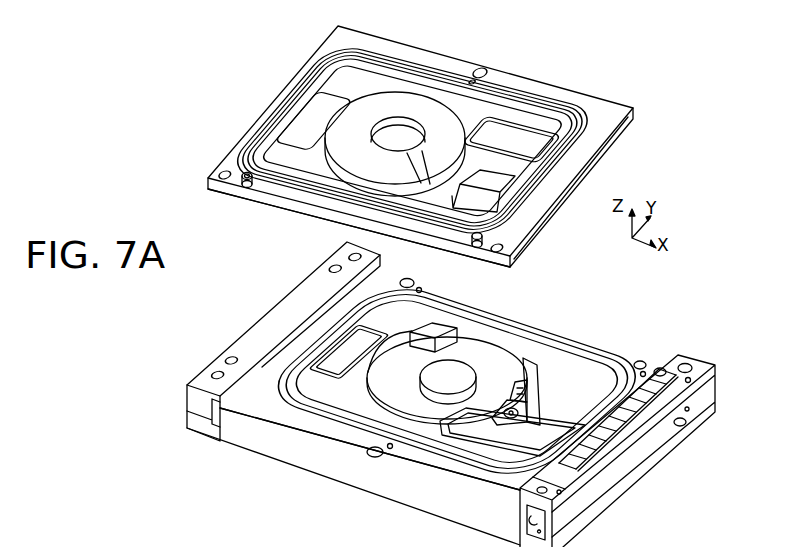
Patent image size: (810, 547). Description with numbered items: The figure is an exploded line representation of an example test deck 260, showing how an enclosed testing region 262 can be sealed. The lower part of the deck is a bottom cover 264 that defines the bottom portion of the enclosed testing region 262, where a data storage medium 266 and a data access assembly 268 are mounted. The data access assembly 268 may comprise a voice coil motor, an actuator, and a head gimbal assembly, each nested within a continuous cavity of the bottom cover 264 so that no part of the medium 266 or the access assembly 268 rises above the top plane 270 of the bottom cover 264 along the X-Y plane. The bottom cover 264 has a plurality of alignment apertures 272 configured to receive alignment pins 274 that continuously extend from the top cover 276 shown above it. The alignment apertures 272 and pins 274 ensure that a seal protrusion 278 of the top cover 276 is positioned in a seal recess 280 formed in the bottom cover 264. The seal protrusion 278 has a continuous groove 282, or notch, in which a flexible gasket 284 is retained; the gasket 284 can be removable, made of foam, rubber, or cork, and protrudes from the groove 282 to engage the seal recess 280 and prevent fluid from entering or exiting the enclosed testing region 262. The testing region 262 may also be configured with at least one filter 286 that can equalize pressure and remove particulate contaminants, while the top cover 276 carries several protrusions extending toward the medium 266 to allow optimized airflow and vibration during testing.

The test deck 260 is at (192, 84).
The enclosed testing region 262 is at (530, 353).
The bottom cover 264 is at (377, 481).
The data storage medium 266 is at (413, 396).
The data access assembly 268 is at (508, 390).
The top plane 270 is at (262, 428).
The alignment apertures 272 is at (413, 284).
The alignment pins 274 is at (245, 189).
The top cover 276 is at (617, 118).
The seal protrusion 278 is at (317, 196).
The seal recess 280 is at (497, 320).
The continuous groove 282 is at (296, 74).
The flexible gasket 284 is at (503, 94).
The filter 286 is at (330, 366).